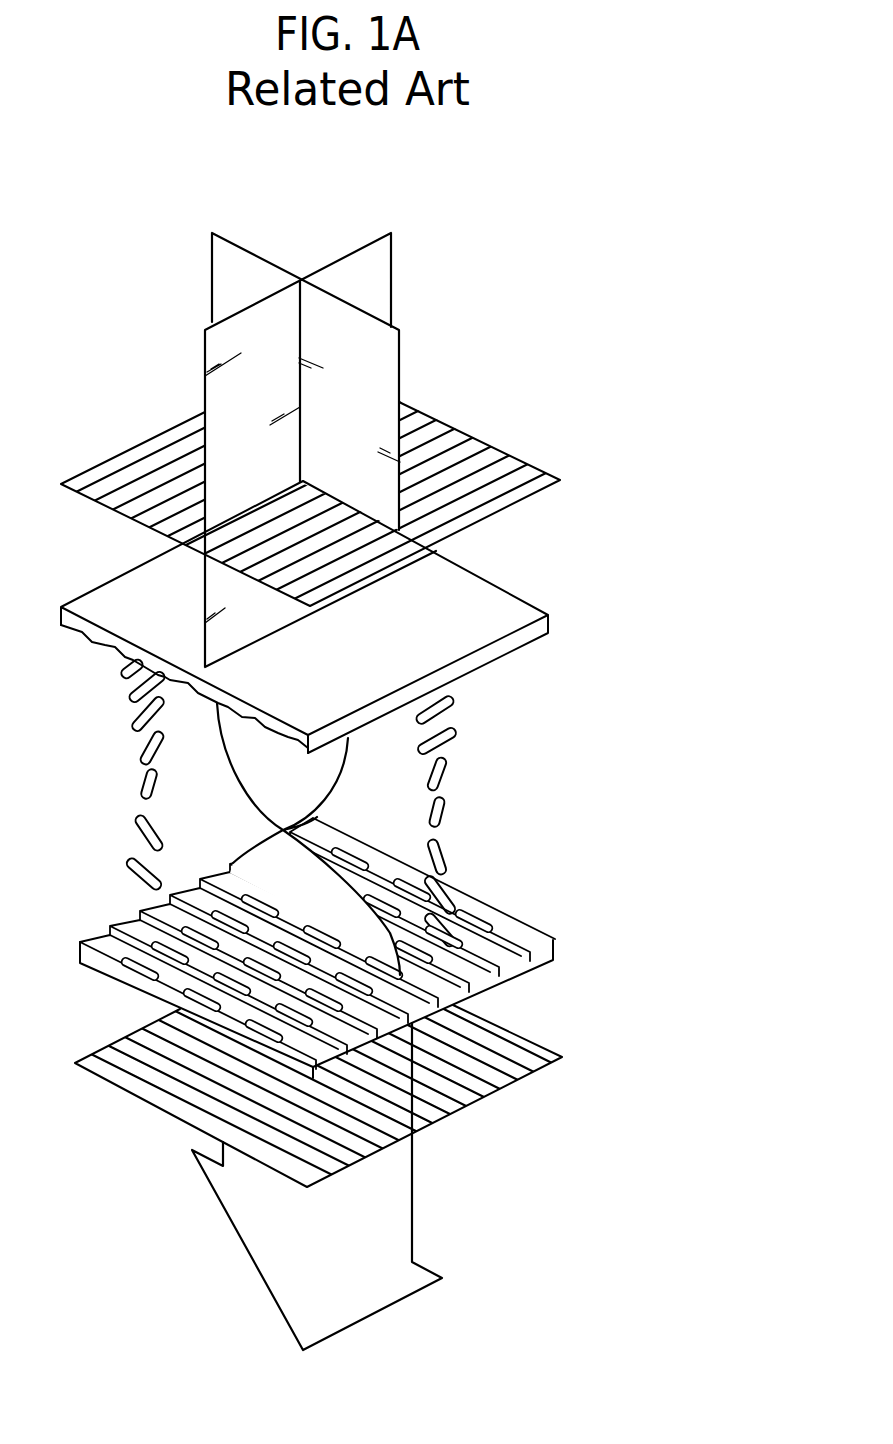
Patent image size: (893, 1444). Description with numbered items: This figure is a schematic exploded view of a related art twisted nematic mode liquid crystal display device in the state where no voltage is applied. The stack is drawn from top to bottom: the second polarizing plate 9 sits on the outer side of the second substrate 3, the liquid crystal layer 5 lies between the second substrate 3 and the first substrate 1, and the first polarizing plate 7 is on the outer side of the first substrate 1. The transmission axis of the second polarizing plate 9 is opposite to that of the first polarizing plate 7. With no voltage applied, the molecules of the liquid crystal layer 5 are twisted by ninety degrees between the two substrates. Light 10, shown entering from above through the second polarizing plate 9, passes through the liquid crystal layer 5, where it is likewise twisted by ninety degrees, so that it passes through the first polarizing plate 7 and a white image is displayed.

The light 10 is at (380, 292).
The second polarizing plate 9 is at (480, 437).
The second substrate 3 is at (490, 598).
The liquid crystal layer 5 is at (440, 808).
The first substrate 1 is at (513, 913).
The first polarizing plate 7 is at (493, 1095).